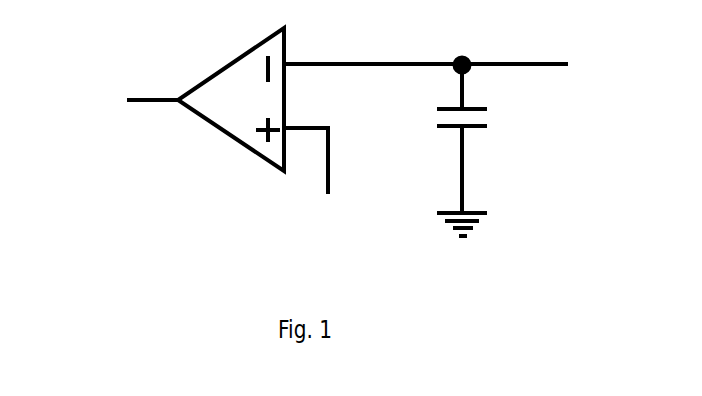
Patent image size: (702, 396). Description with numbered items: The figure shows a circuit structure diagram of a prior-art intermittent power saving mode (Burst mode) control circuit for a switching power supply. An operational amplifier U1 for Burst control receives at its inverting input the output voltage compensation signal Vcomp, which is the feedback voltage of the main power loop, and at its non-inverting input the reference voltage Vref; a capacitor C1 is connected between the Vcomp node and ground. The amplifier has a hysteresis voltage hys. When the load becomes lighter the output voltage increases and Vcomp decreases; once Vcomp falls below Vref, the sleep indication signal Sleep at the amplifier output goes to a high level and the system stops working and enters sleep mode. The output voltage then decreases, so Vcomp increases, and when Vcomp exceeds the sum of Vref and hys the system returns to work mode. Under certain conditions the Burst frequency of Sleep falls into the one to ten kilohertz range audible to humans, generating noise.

The operational amplifier U1 is at (231, 99).
The capacitor C1 is at (439, 150).
The sleep indication signal Sleep is at (114, 101).
The hysteresis voltage hys is at (210, 154).
The reference voltage Vref is at (320, 178).
The output voltage compensation signal Vcomp is at (427, 53).